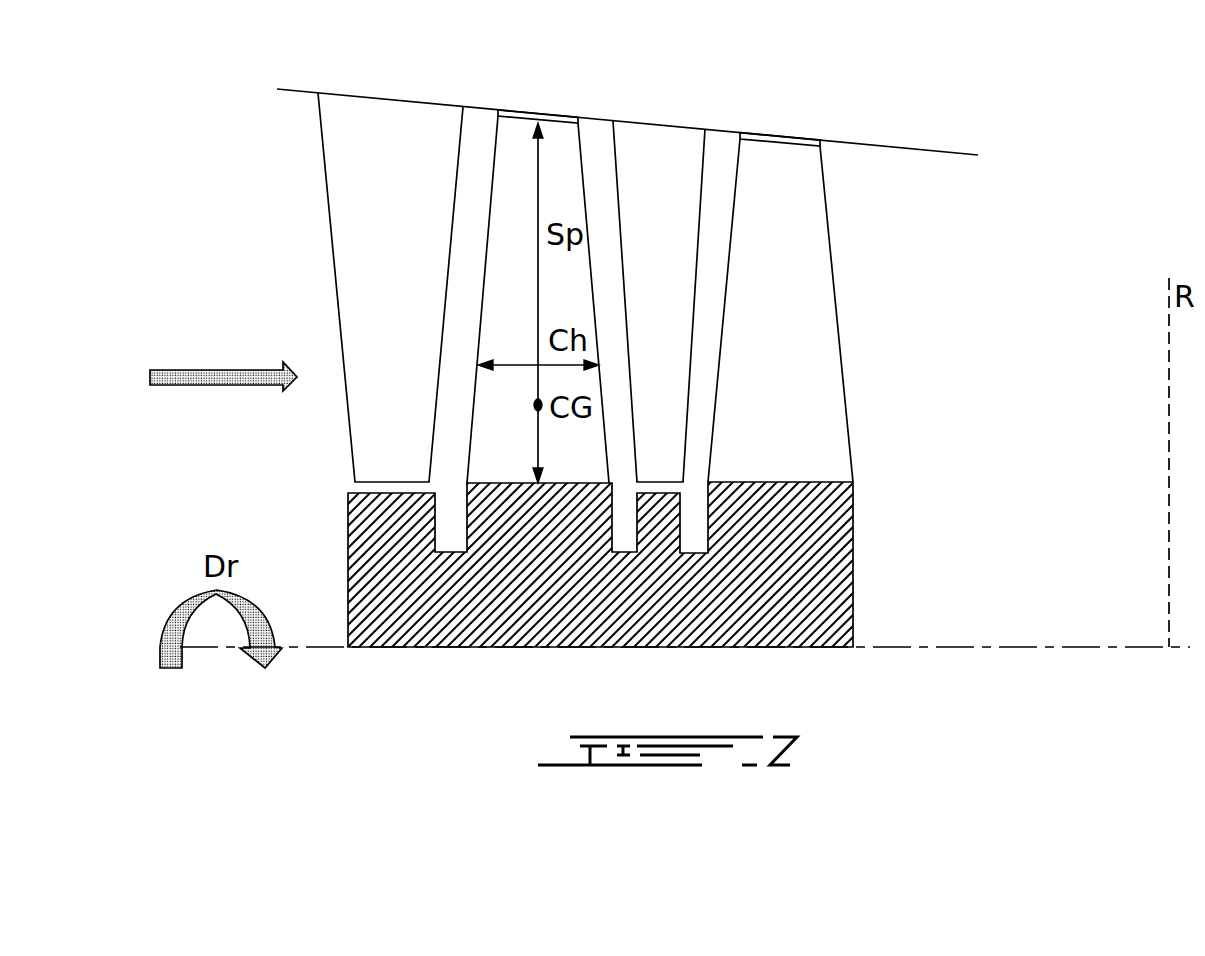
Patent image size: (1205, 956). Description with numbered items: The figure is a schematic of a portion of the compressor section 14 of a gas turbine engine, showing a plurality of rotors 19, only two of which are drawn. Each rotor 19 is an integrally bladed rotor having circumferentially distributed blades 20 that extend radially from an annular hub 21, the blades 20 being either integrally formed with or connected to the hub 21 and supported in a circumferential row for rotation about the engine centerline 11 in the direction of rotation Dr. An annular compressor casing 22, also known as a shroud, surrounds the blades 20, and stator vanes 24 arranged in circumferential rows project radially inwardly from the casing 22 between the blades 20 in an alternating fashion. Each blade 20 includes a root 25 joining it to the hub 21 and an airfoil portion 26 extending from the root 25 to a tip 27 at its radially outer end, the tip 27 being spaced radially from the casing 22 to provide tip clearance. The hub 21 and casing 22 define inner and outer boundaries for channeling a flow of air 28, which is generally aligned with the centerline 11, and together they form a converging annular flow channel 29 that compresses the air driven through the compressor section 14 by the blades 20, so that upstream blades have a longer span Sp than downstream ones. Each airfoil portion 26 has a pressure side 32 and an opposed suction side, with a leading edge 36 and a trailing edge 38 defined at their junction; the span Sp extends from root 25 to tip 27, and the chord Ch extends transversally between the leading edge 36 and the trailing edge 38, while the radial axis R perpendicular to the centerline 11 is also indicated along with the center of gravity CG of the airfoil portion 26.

The centerline 11 is at (1027, 645).
The compressor section 14 is at (222, 165).
The rotor 19 is at (496, 300).
The blade 20 is at (497, 397).
The annular hub 21 is at (407, 613).
The compressor casing 22 is at (308, 90).
The stator vane 24 is at (390, 158).
The root 25 is at (538, 495).
The airfoil portion 26 is at (515, 178).
The tip 27 is at (547, 117).
The flow of air 28 is at (208, 375).
The converging annular flow channel 29 is at (901, 375).
The pressure side 32 is at (760, 420).
The leading edge 36 is at (478, 335).
The trailing edge 38 is at (598, 195).